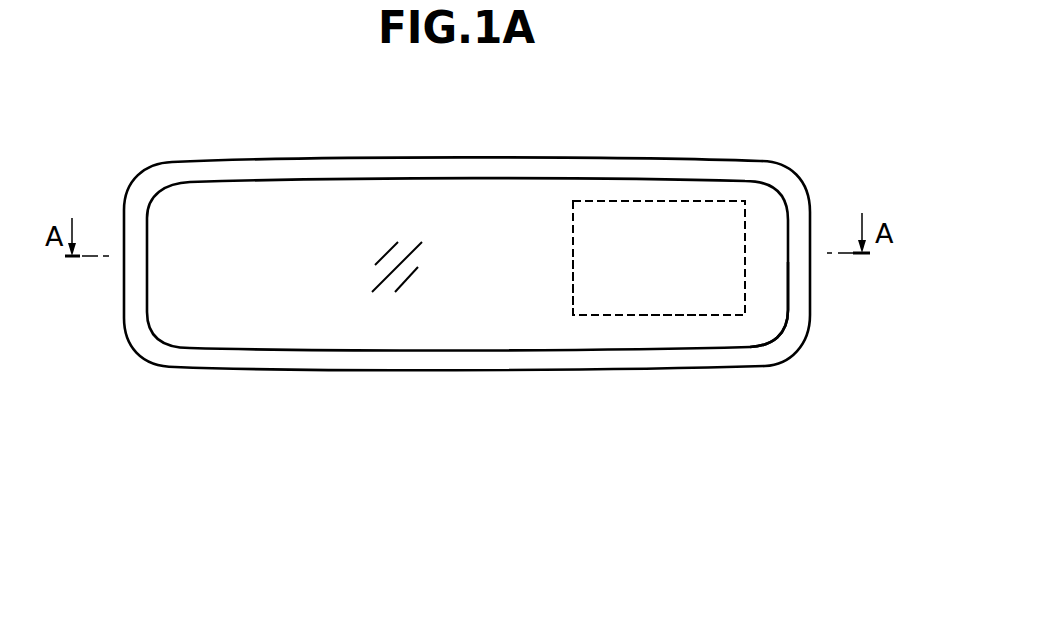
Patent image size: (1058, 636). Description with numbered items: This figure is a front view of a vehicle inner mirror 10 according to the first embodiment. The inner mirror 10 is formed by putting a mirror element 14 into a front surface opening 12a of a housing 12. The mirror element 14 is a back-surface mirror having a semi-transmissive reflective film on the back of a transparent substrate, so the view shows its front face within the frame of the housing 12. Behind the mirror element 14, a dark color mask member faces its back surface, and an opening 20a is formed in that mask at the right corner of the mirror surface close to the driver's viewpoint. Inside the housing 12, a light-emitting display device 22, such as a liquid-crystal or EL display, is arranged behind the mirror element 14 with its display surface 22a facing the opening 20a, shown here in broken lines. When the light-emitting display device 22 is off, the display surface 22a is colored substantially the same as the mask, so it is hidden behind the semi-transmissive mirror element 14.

The inner mirror 10 is at (474, 240).
The housing 12 is at (503, 157).
The front surface opening 12a is at (787, 300).
The mirror element 14 is at (257, 322).
The opening 20a is at (590, 295).
The light-emitting display device 22 is at (644, 194).
The display surface 22a is at (675, 295).